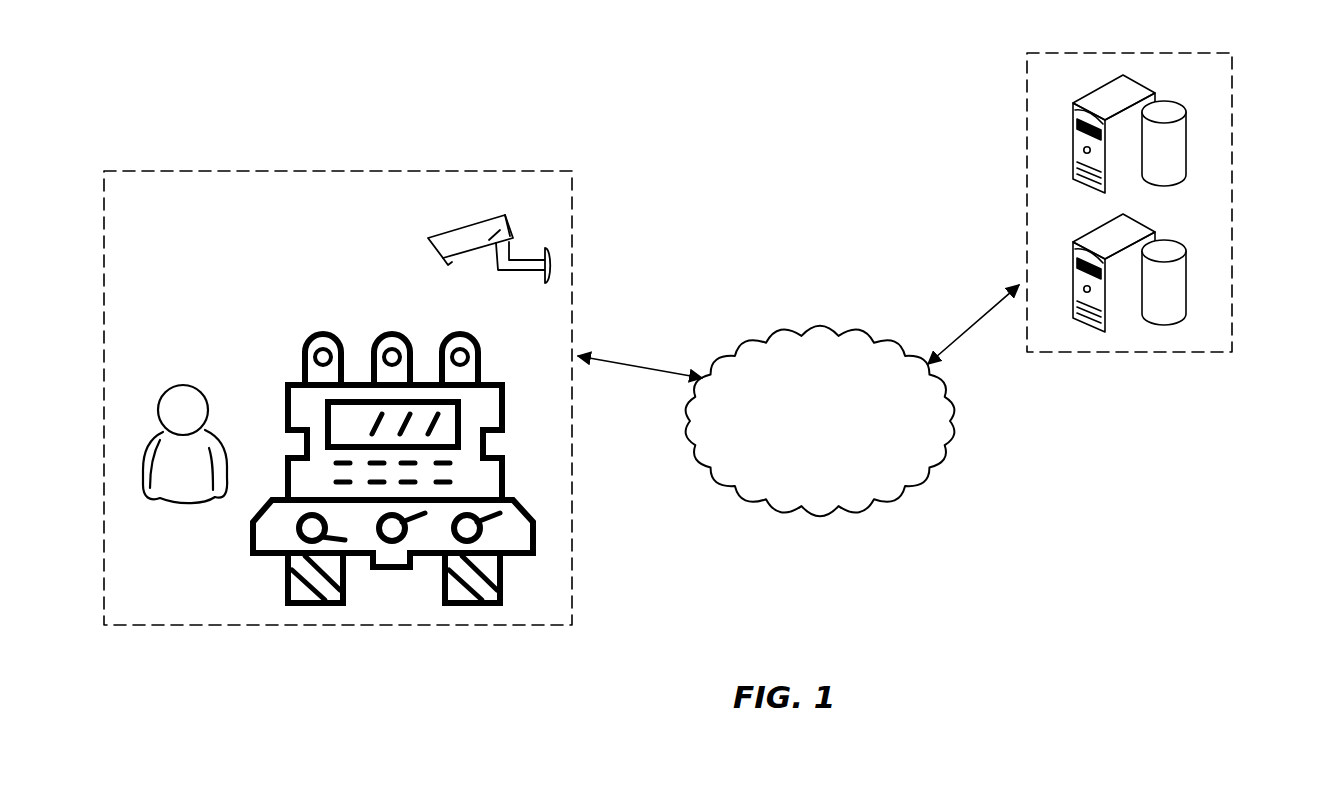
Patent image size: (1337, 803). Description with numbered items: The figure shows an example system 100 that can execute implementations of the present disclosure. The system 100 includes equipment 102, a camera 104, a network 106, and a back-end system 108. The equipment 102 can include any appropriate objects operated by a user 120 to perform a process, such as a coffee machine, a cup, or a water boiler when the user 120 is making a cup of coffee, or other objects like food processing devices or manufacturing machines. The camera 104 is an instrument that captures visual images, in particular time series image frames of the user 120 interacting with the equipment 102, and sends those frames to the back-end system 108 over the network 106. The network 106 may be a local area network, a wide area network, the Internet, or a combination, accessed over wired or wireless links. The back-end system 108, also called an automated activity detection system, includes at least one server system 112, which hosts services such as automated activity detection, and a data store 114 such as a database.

The system 100 is at (604, 119).
The equipment 102 is at (330, 332).
The camera 104 is at (423, 245).
The network 106 is at (823, 331).
The back-end system 108 is at (1232, 203).
The server system 112 is at (1073, 120).
The data store 114 is at (1186, 147).
The user 120 is at (176, 374).